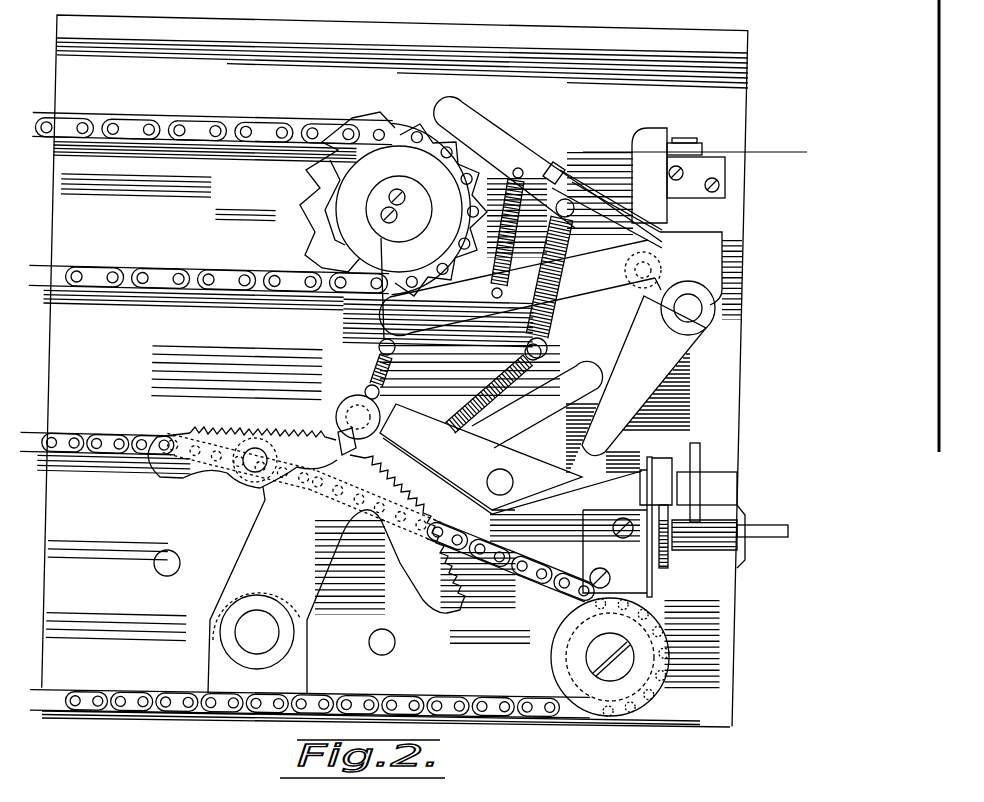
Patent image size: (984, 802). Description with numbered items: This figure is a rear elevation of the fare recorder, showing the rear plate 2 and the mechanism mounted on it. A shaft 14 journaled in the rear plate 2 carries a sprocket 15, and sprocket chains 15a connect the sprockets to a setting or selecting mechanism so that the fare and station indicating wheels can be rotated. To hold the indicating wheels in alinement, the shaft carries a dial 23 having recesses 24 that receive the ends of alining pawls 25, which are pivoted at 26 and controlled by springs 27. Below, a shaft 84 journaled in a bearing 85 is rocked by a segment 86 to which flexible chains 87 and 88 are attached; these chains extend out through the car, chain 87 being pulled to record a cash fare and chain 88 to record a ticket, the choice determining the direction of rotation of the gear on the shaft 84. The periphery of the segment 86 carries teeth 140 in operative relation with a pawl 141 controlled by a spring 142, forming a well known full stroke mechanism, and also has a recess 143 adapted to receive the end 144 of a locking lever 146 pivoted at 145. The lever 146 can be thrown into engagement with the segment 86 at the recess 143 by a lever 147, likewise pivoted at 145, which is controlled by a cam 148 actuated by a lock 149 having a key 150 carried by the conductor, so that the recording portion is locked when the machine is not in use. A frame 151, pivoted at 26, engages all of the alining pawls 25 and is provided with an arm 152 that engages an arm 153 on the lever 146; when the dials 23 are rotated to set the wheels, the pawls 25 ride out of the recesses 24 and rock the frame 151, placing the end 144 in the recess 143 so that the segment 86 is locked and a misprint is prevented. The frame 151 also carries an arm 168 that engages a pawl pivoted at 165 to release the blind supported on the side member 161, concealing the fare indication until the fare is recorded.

The rear plate 2 is at (490, 363).
The shaft 14 is at (402, 195).
The sprocket 15 is at (411, 210).
The sprocket chains 15a is at (165, 275).
The dial 23 is at (302, 222).
The recesses 24 is at (322, 184).
The alining pawl 25 is at (505, 138).
The pivot 26 is at (690, 308).
The spring 27 is at (537, 278).
The shaft 84 is at (257, 632).
The bearing 85 is at (210, 668).
The segment 86 is at (274, 590).
The chain 87 is at (115, 442).
The chain 88 is at (423, 705).
The teeth 140 is at (238, 432).
The pawl 141 is at (345, 412).
The spring 142 is at (452, 392).
The recess 143 is at (335, 478).
The end 144 is at (355, 410).
The pivot 145 is at (508, 483).
The locking lever 146 is at (511, 459).
The lever 147 is at (625, 466).
The cam 148 is at (665, 570).
The lock 149 is at (708, 475).
The key 150 is at (768, 530).
The frame 151 is at (562, 168).
The arm 152 is at (644, 376).
The arm 153 is at (537, 404).
The side member 161 is at (700, 142).
The pivot 165 is at (690, 137).
The arm 168 is at (640, 145).